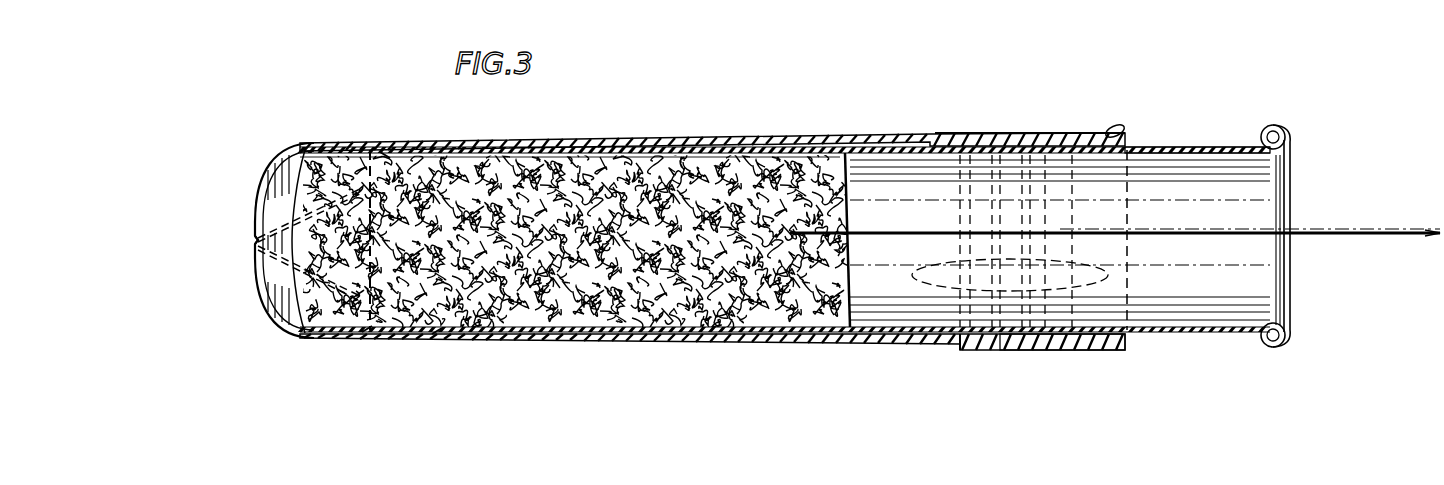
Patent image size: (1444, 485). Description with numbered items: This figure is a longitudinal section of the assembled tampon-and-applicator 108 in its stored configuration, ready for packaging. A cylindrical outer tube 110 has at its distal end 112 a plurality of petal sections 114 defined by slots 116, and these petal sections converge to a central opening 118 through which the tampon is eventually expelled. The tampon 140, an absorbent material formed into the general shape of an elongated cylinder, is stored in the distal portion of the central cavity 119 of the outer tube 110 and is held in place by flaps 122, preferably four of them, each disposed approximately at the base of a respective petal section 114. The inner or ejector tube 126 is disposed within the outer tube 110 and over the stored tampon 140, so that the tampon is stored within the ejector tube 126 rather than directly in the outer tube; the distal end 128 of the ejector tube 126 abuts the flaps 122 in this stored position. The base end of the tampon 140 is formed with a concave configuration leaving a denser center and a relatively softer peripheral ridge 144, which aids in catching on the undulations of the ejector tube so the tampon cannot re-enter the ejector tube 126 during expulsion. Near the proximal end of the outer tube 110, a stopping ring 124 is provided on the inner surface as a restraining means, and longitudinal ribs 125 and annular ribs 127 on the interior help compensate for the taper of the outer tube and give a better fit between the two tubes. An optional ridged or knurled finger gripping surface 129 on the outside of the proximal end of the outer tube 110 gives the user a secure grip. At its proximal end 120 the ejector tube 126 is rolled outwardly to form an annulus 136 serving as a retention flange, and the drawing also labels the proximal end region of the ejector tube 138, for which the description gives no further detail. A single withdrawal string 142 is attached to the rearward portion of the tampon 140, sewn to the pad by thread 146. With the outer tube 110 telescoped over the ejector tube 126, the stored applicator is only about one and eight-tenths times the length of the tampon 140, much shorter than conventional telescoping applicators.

The tampon-and-applicator 108 is at (678, 132).
The outer tube 110 is at (790, 137).
The distal end 112 is at (300, 342).
The petal sections 114 is at (275, 320).
The slots 116 is at (258, 254).
The central opening 118 is at (252, 240).
The central cavity 119 is at (903, 184).
The proximal end 120 is at (1150, 108).
The flaps 122 is at (385, 150).
The stopping ring 124 is at (1058, 333).
The longitudinal ribs 125 is at (925, 146).
The ejector tube 126 is at (1205, 147).
The annular ribs 127 is at (964, 336).
The distal end 128 is at (376, 147).
The finger gripping surface 129 is at (1000, 134).
The annulus 136 is at (1284, 338).
The end closure 138 is at (1305, 157).
The tampon 140 is at (628, 318).
The withdrawal string 142 is at (1362, 232).
The peripheral ridge 144 is at (823, 150).
The thread 146 is at (1436, 240).